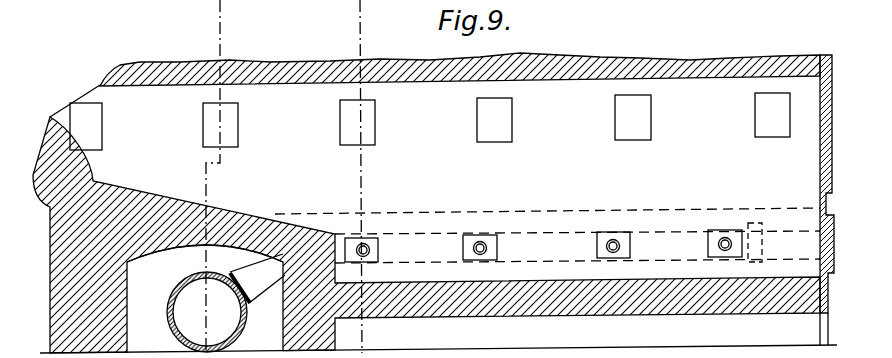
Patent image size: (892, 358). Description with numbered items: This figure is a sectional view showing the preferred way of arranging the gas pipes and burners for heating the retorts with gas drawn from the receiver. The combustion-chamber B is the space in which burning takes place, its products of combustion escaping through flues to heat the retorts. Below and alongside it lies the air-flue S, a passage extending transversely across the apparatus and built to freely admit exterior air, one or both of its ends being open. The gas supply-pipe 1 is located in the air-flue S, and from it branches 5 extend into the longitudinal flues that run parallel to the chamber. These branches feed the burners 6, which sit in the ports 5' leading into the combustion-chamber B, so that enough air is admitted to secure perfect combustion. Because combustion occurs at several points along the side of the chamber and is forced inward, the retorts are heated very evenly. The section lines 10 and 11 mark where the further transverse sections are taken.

The gas supply-pipe 1 is at (247, 328).
The branch 5 is at (257, 278).
The port 5' is at (543, 246).
The burner 6 is at (780, 238).
The section line 10 10 is at (187, 27).
The section line 11 11 is at (322, 22).
The combustion-chamber B is at (435, 203).
The air-flue S is at (205, 274).